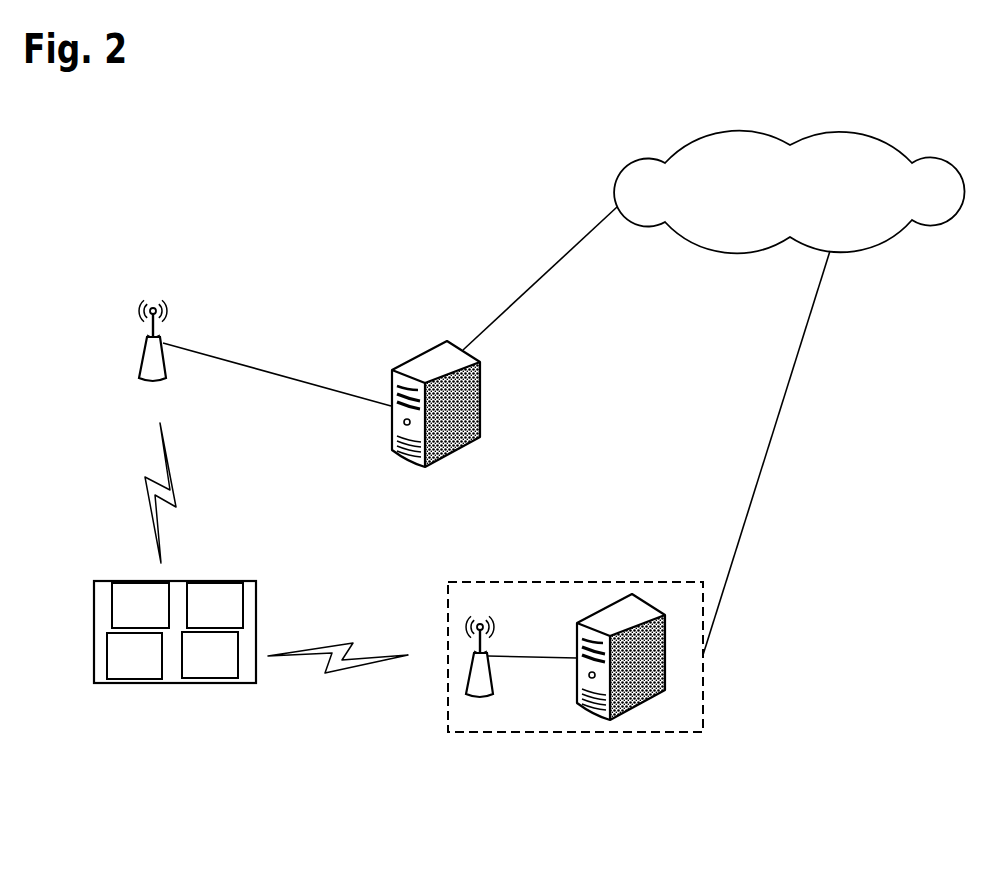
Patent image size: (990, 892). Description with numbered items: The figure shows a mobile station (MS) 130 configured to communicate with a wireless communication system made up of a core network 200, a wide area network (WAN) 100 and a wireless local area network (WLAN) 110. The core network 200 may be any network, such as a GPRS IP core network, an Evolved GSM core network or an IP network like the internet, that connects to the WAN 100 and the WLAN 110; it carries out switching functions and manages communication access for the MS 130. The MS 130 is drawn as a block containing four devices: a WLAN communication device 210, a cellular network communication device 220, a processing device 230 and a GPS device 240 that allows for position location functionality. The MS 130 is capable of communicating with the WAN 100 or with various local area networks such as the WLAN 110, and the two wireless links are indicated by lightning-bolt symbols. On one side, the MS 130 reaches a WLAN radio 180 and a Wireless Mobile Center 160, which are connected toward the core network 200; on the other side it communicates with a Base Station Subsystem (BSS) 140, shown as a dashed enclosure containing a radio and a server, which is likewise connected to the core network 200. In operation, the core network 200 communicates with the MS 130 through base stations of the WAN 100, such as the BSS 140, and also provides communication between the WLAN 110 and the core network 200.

The wide area network 100 is at (357, 721).
The wireless local area network 110 is at (238, 517).
The mobile station 130 is at (182, 683).
The Base Station Subsystem 140 is at (546, 733).
The Wireless Mobile Center 160 is at (418, 357).
The WLAN radio 180 is at (140, 362).
The core network 200 is at (808, 220).
The WLAN communication device 210 is at (140, 605).
The cellular network communication device 220 is at (210, 655).
The processing device 230 is at (134, 656).
The GPS device 240 is at (215, 605).